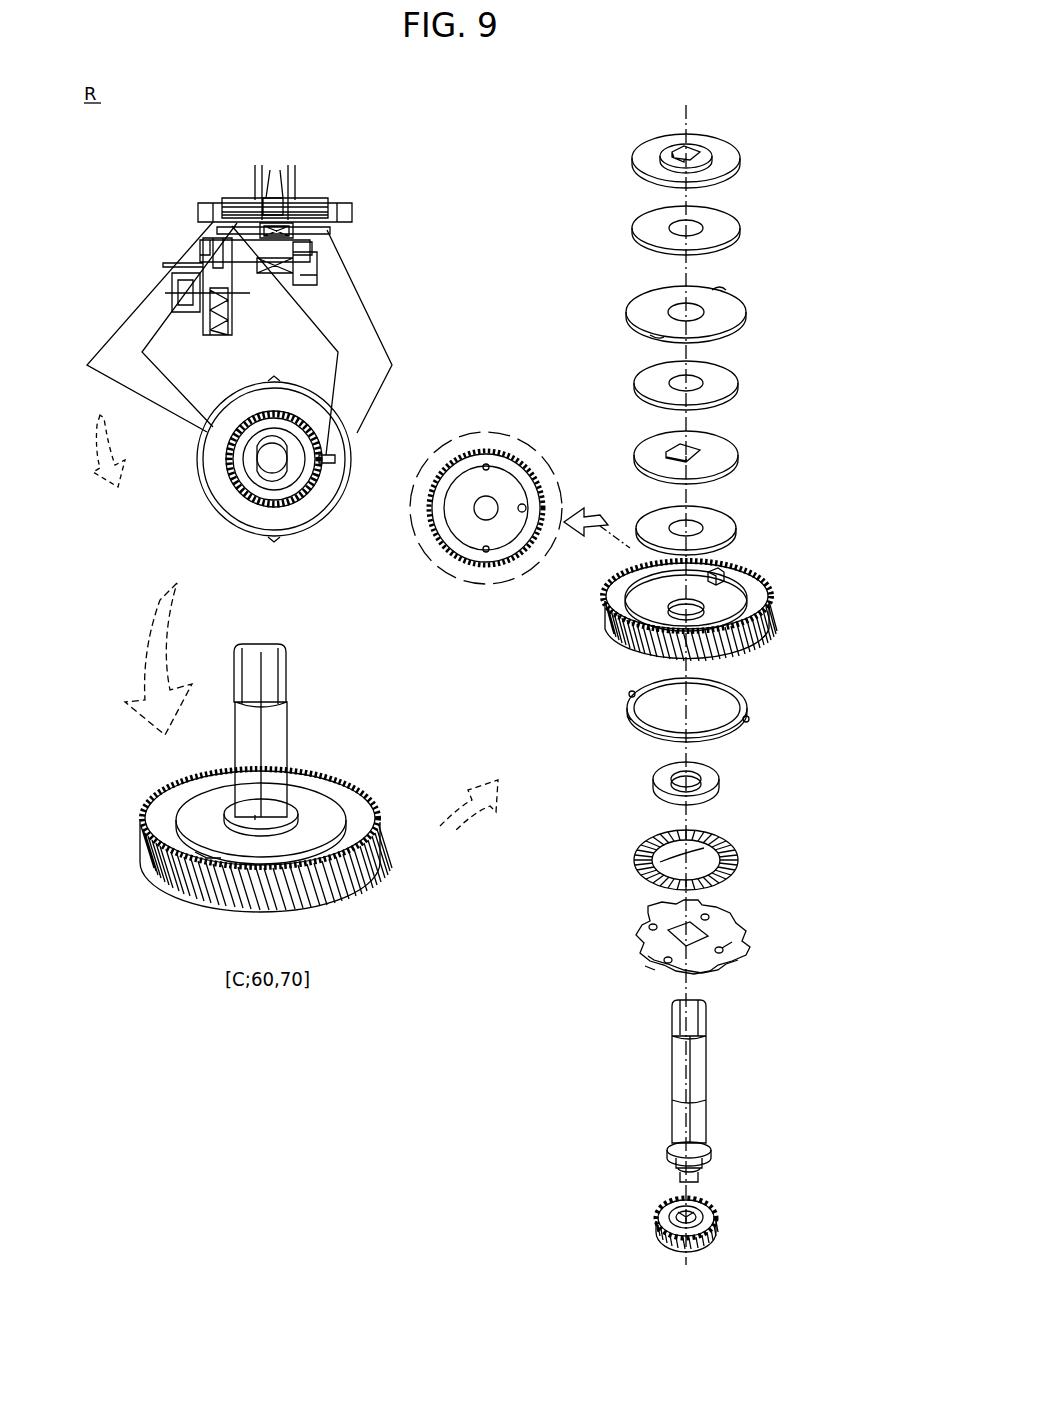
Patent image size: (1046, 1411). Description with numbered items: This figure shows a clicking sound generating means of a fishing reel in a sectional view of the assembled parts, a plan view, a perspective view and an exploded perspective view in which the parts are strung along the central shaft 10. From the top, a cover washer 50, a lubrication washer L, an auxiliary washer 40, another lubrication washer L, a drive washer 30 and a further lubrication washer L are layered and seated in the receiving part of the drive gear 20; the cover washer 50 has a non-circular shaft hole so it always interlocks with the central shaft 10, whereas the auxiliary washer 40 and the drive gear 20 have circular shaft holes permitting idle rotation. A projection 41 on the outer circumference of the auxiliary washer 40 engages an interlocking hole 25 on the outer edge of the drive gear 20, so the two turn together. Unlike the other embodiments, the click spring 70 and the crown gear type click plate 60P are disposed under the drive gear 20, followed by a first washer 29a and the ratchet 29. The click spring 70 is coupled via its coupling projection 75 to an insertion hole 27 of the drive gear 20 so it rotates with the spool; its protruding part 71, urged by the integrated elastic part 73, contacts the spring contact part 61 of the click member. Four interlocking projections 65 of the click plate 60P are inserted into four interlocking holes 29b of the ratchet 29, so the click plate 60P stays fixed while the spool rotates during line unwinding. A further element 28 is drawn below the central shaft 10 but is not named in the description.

The central shaft 10 is at (298, 182).
The drive gear 20 is at (355, 214).
The interlocking hole 25 is at (718, 577).
The insertion hole 27 is at (524, 512).
The small gear 28 is at (312, 246).
The ratchet 29 is at (330, 230).
The first washer 29a is at (722, 776).
The interlocking holes 29b is at (727, 950).
The drive washer 30 is at (732, 430).
The auxiliary washer 40 is at (674, 291).
The projection 41 is at (652, 338).
The cover washer 50 is at (736, 133).
The click plate 60P is at (689, 863).
The spring contact part 61 is at (640, 880).
The interlocking projections 65 is at (640, 852).
The click spring 70 is at (655, 712).
The protruding part 71 is at (630, 693).
The elastic part 73 is at (630, 720).
The coupling projection 75 is at (749, 720).
The lubrication washer L is at (716, 214).